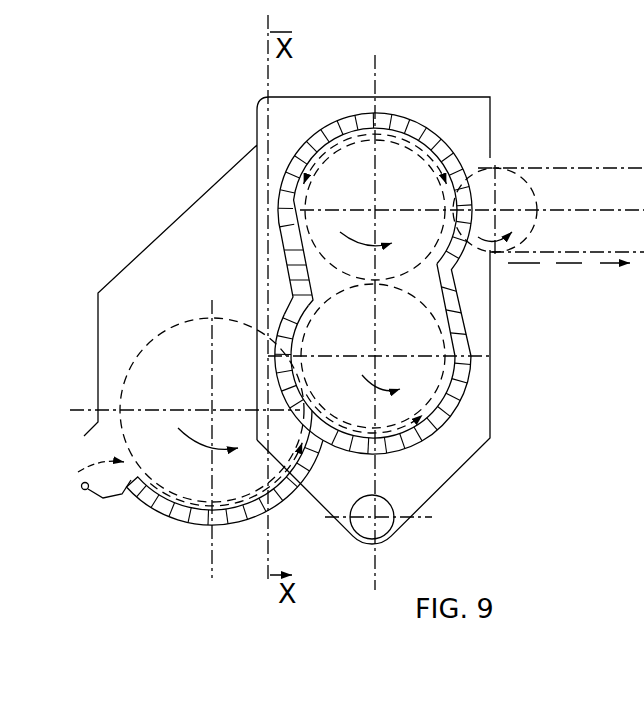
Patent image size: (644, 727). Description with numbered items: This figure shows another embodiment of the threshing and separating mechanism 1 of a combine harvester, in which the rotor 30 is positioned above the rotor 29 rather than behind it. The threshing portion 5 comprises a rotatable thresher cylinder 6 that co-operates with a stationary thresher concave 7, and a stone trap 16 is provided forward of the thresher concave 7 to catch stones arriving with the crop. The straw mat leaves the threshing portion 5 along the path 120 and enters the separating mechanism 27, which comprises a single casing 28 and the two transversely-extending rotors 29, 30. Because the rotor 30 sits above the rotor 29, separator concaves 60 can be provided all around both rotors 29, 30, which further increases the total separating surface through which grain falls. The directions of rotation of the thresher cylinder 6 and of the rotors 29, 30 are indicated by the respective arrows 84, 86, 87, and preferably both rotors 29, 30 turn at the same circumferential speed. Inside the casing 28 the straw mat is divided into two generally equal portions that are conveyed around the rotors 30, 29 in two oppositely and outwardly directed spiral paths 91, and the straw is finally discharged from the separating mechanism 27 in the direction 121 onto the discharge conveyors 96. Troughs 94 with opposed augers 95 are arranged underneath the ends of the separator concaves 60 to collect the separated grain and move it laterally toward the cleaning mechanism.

The mechanism 1 is at (185, 167).
The threshing portion 5 is at (230, 312).
The thresher cylinder 6 is at (146, 345).
The thresher concave 7 is at (172, 521).
The stone trap 16 is at (112, 498).
The separating mechanism 27 is at (450, 122).
The casing 28 is at (409, 116).
The rotor 29 is at (463, 396).
The rotor 30 is at (438, 183).
The separator concaves 60 is at (316, 128).
The arrow 84 is at (180, 430).
The arrow 86 is at (364, 378).
The arrow 87 is at (340, 232).
The spiral paths 91 is at (467, 328).
The troughs 94 is at (450, 480).
The augers 95 is at (395, 532).
The discharge conveyors 96 is at (598, 168).
The path 120 is at (92, 453).
The direction 121 is at (548, 265).